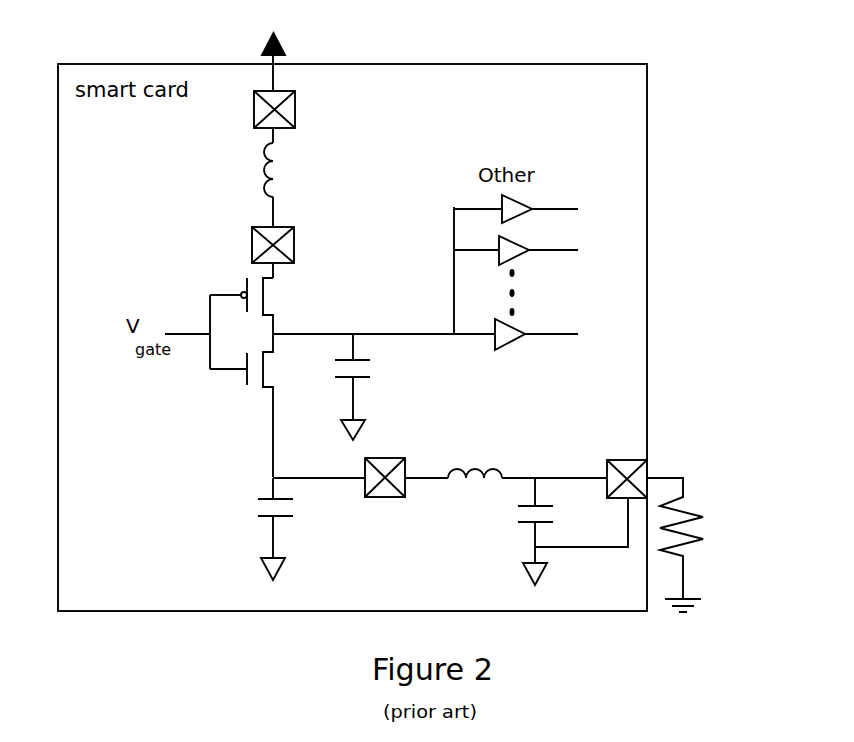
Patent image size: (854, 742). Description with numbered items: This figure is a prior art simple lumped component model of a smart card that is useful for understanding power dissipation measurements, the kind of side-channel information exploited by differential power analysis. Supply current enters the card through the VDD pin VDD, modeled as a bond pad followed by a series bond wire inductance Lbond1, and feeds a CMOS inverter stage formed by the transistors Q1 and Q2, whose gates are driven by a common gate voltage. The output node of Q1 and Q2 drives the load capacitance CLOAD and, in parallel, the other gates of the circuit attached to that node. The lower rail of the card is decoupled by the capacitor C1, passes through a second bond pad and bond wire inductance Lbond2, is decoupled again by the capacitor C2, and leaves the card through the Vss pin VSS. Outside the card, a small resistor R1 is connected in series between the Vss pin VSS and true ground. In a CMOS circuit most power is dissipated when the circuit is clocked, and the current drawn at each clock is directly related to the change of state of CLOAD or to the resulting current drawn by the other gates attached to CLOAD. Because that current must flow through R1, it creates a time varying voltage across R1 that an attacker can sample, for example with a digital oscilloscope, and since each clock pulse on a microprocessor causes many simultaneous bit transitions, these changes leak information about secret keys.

The VDD pin (bond pad) VDD is at (300, 86).
The bond wire inductance Lbond1 is at (294, 177).
The PMOS transistor Q1 is at (261, 306).
The NMOS transistor Q2 is at (259, 405).
The load capacitance CLOAD is at (382, 387).
The bond wire inductance Lbond2 is at (475, 448).
The Vss pin VSS is at (627, 453).
The capacitor C1 is at (294, 529).
The capacitor C2 is at (573, 531).
The small resistor R1 is at (694, 545).